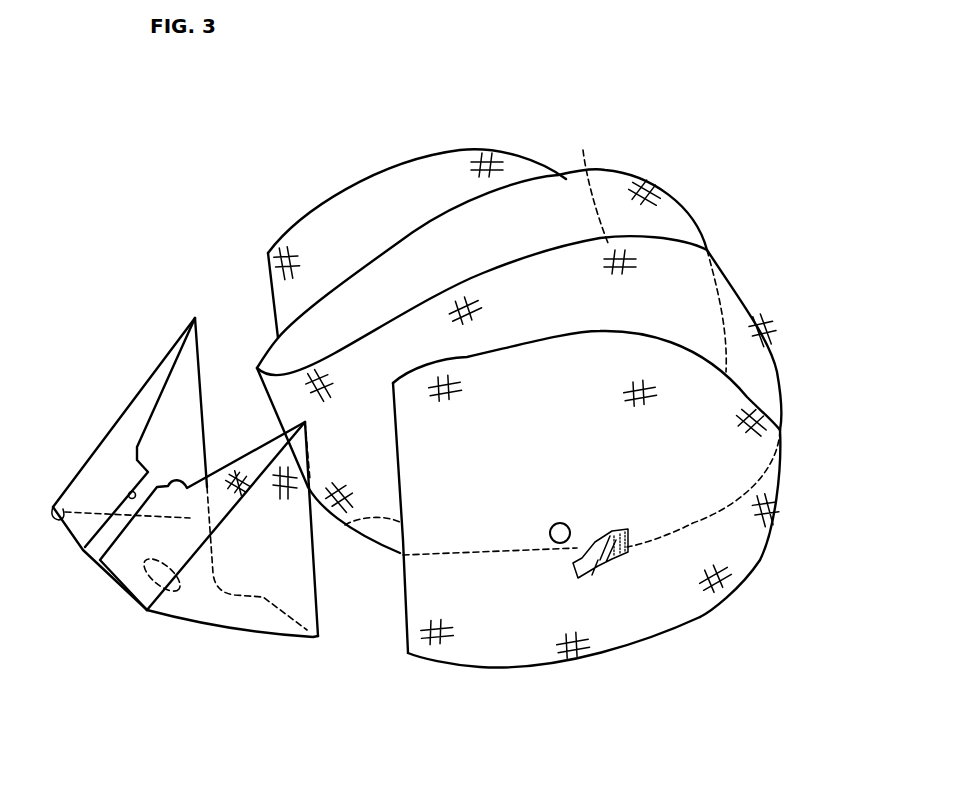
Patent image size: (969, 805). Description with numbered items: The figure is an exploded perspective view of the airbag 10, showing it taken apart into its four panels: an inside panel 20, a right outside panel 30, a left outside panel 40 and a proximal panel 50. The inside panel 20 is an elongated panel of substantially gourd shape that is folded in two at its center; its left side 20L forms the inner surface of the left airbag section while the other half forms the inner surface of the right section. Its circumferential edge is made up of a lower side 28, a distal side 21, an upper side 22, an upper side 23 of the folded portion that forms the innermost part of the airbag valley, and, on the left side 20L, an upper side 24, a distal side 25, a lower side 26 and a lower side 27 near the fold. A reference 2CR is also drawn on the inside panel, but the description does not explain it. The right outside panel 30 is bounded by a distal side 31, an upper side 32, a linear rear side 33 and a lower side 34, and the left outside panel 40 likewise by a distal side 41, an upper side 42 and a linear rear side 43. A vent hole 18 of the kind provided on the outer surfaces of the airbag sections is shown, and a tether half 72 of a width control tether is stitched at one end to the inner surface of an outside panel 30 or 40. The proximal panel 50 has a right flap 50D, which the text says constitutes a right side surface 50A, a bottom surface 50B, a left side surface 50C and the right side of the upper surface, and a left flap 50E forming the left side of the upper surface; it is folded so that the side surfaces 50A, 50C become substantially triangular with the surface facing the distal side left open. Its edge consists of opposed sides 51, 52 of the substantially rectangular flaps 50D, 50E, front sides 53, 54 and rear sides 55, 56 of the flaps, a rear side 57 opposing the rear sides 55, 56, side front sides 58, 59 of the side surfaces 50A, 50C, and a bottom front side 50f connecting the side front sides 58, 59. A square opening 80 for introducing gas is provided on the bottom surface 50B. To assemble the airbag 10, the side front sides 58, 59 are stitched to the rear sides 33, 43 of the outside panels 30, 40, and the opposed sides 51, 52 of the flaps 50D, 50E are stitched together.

The airbag 10 is at (790, 212).
The vent hole 18 is at (572, 526).
The inside panel 20 is at (545, 303).
The left side of inside panel 20L is at (368, 290).
The distal side 21 is at (782, 372).
The upper side 22 is at (483, 275).
The upper side of folded portion 23 is at (270, 364).
The upper side 24 is at (413, 231).
The distal side 25 is at (712, 232).
The lower side 26 is at (376, 517).
The lower side near folded portion 27 is at (353, 540).
The lower side 28 is at (491, 538).
The center line 2CR is at (555, 273).
The right outside panel 30 is at (604, 499).
The distal side 31 is at (774, 516).
The upper side 32 is at (535, 332).
The linear rear side 33 is at (400, 454).
The lower side 34 is at (496, 656).
The left outside panel 40 is at (355, 227).
The distal side 41 is at (589, 181).
The upper side 42 is at (405, 163).
The linear rear side 43 is at (270, 283).
The proximal panel 50 is at (198, 517).
The right side surface 50A is at (240, 630).
The bottom surface 50B is at (166, 618).
The left side surface 50C is at (187, 387).
The right flap 50D is at (238, 500).
The left flap 50E is at (127, 420).
The bottom front side 50f is at (283, 602).
The opposed side of right flap 51 is at (165, 487).
The opposed side of left flap 52 is at (128, 496).
The front side of right flap 53 is at (232, 462).
The front side of left flap 54 is at (160, 410).
The rear side of right flap 55 is at (115, 587).
The rear side of left flap 56 is at (54, 506).
The rear side 57 is at (82, 568).
The side front side 58 is at (320, 634).
The side front side 59 is at (200, 350).
The tether half 72 is at (600, 566).
The opening 80 is at (167, 563).